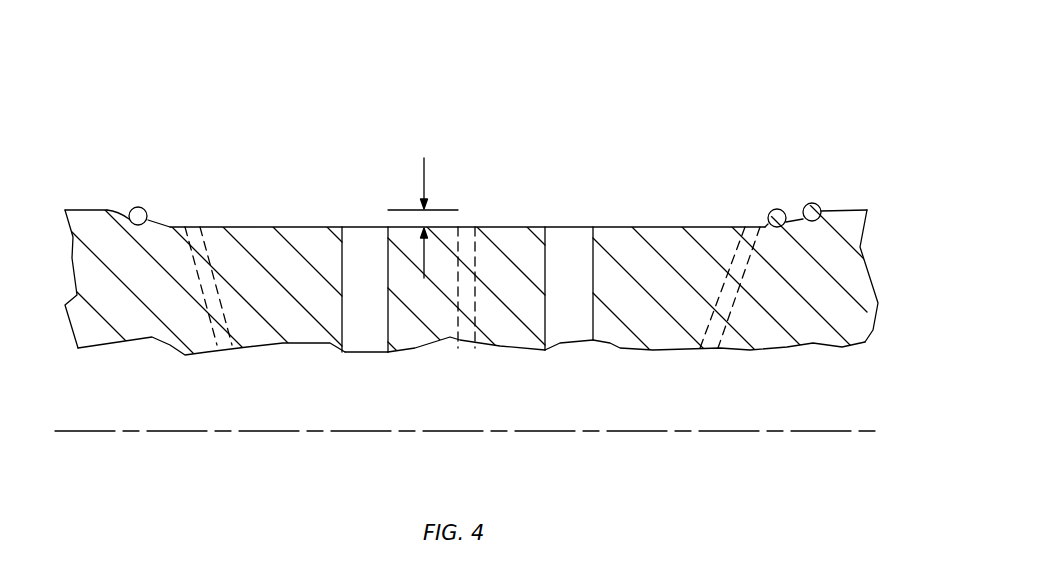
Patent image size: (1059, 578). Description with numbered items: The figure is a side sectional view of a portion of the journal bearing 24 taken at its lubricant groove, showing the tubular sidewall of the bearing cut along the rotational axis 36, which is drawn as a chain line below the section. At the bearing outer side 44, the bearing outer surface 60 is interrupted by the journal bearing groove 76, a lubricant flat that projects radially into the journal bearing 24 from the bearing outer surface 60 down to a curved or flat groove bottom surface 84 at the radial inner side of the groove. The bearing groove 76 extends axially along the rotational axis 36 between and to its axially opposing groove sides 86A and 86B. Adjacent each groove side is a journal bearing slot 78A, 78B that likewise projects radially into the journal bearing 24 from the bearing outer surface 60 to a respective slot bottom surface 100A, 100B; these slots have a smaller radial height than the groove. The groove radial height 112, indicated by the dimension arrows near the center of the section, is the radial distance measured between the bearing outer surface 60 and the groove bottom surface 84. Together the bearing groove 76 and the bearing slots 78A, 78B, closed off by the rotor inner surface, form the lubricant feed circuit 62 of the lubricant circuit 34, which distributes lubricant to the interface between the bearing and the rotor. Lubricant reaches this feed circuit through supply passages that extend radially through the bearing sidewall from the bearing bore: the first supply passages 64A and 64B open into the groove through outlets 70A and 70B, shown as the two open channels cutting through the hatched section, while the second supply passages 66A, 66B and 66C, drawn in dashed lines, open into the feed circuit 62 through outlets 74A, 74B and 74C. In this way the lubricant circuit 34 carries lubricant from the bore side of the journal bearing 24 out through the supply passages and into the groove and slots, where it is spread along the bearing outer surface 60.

The journal bearing 24 is at (487, 214).
The lubricant circuit 34 is at (470, 168).
The lubricant feed circuit 62 is at (719, 196).
The bearing outer side 44 is at (880, 239).
The bearing outer surface 60 is at (860, 209).
The journal bearing groove 76 is at (664, 212).
The journal bearing slot 78A is at (128, 213).
The journal bearing slot 78B is at (808, 200).
The groove bottom surface 84 is at (265, 226).
The groove side 86A is at (143, 222).
The groove side 86B is at (772, 228).
The slot bottom surface 100A is at (141, 226).
The slot bottom surface 100B is at (816, 222).
The outlet 70A is at (363, 226).
The outlet 70B is at (575, 226).
The outlet 74A is at (217, 280).
The outlet 74B is at (739, 281).
The outlet 74C is at (468, 279).
The first supply passage 64A is at (365, 325).
The first supply passage 64B is at (572, 330).
The second supply passage 66A is at (222, 332).
The second supply passage 66B is at (710, 330).
The second supply passage 66C is at (466, 330).
The groove radial height 112 is at (422, 176).
The rotational axis 36 is at (838, 433).